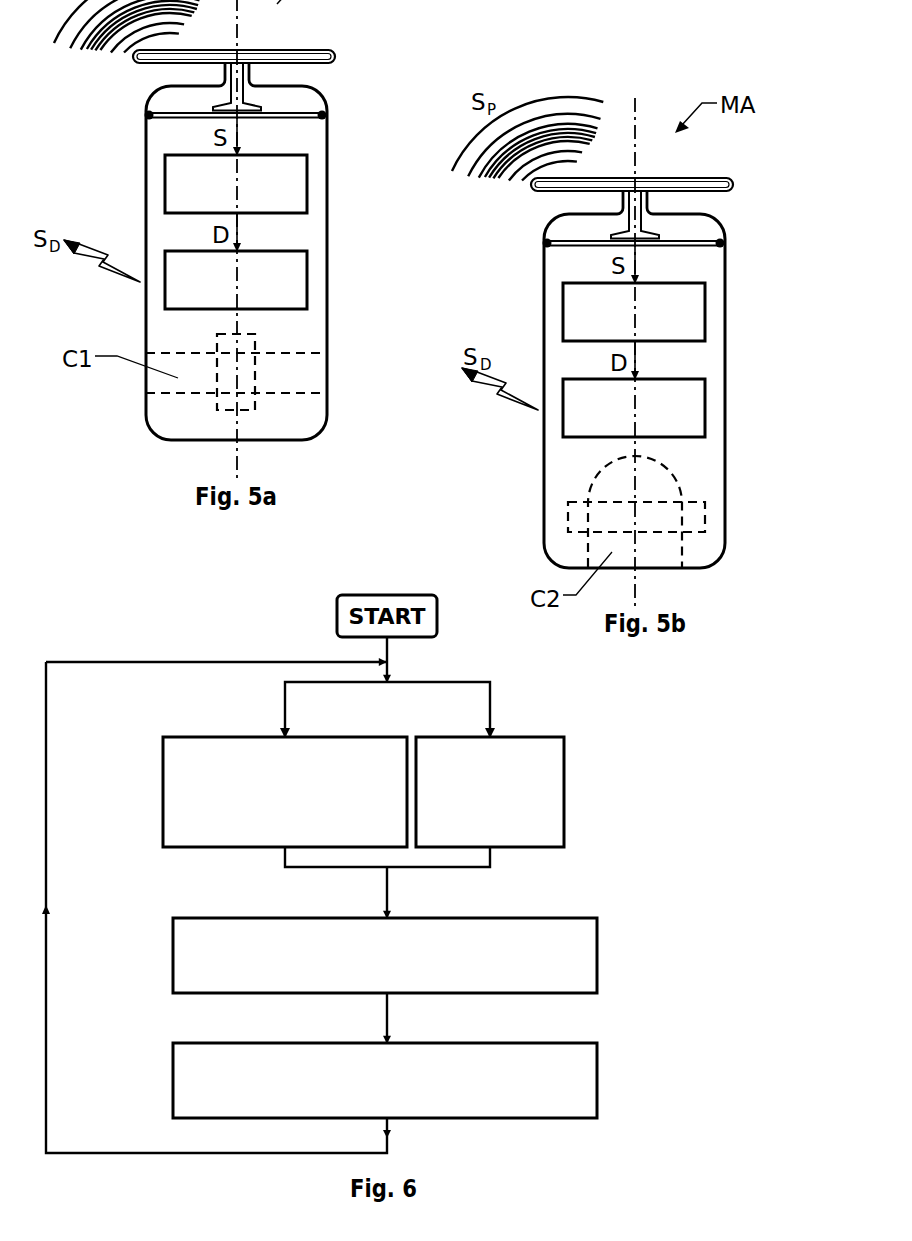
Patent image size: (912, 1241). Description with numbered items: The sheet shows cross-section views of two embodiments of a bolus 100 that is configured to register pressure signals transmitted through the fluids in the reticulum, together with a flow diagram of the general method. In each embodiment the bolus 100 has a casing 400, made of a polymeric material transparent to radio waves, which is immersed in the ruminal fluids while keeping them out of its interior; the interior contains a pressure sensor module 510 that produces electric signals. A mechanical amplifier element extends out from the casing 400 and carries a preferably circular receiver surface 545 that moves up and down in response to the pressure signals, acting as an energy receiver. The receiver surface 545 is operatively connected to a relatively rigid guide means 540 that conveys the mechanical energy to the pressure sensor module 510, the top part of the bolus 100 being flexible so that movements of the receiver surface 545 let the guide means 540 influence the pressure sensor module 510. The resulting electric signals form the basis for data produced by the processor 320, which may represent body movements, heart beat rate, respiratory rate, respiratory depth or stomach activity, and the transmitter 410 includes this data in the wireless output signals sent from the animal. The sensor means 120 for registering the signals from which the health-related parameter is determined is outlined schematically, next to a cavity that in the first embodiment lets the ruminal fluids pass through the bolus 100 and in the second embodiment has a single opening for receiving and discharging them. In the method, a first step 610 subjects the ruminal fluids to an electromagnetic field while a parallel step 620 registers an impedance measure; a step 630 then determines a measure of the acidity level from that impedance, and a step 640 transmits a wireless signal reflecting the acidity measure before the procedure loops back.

In FIG. 5A, the bolus 100 is at (228, 239).
In FIG. 5B, the bolus 100 is at (633, 352).
In FIG. 5A, the sensor means 120 is at (319, 362).
In FIG. 5B, the sensor means 120 is at (692, 504).
In FIG. 5A, the processor 320 is at (293, 184).
In FIG. 5B, the processor 320 is at (690, 312).
In FIG. 5A, the casing 400 is at (284, 252).
In FIG. 5B, the casing 400 is at (680, 380).
In FIG. 5A, the transmitter 410 is at (292, 280).
In FIG. 5B, the transmitter 410 is at (690, 408).
In FIG. 5A, the pressure sensor module 510 is at (318, 116).
In FIG. 5B, the pressure sensor module 510 is at (718, 244).
In FIG. 5A, the guide means 540 is at (243, 77).
In FIG. 5B, the guide means 540 is at (641, 207).
In FIG. 5A, the receiver surface 545 is at (275, 36).
In FIG. 5B, the receiver surface 545 is at (674, 166).
In FIG. 6, the first step 610 is at (241, 792).
In FIG. 6, the step of registering an impedance measure 620 is at (532, 792).
In FIG. 6, the step of determining an acidity measure 630 is at (427, 955).
In FIG. 6, the step of transmitting a wireless signal 640 is at (427, 1080).